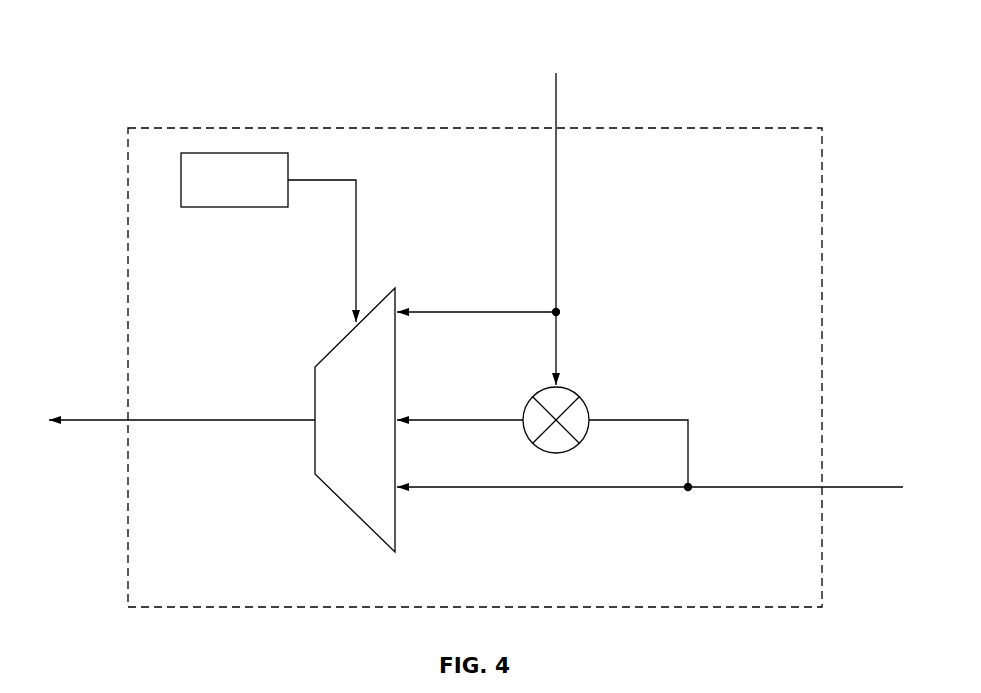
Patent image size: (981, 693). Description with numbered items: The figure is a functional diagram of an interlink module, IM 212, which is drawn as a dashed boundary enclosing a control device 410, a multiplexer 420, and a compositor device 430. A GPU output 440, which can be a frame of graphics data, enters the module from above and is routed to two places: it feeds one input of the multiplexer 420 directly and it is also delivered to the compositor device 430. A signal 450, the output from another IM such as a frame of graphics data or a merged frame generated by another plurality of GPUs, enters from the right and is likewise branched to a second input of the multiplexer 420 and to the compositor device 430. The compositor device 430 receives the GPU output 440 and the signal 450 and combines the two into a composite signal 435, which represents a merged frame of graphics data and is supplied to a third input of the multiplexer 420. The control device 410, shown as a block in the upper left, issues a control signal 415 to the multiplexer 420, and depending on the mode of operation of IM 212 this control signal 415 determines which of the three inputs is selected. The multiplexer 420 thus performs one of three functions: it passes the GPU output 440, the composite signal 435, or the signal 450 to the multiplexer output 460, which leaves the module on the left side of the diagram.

The interlink module 212 is at (738, 128).
The control device 410 is at (288, 166).
The control signal 415 is at (356, 218).
The multiplexer 420 is at (384, 290).
The compositor device 430 is at (580, 396).
The composite signal 435 is at (448, 420).
The GPU output 440 is at (556, 287).
The signal 450 is at (848, 487).
The multiplexer output 460 is at (75, 420).